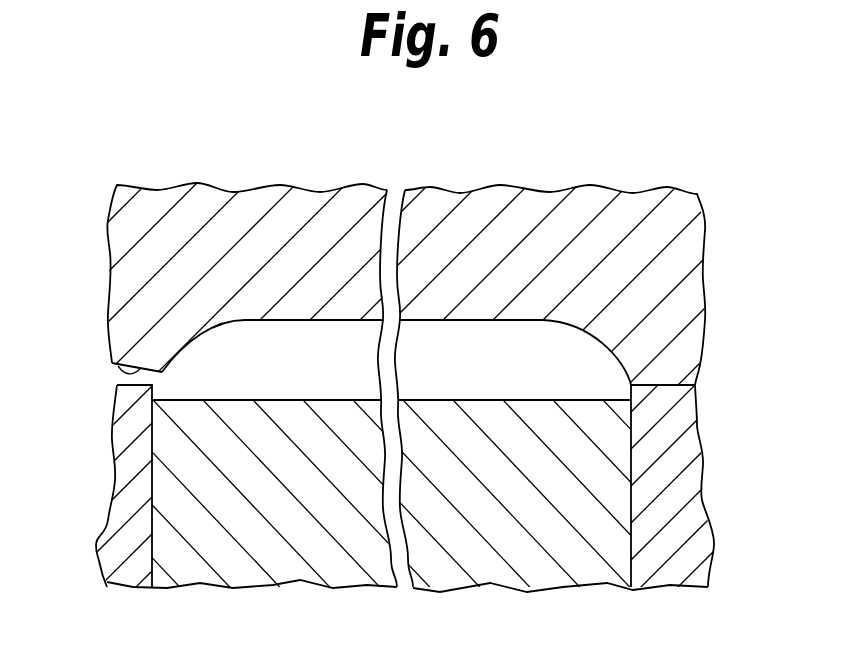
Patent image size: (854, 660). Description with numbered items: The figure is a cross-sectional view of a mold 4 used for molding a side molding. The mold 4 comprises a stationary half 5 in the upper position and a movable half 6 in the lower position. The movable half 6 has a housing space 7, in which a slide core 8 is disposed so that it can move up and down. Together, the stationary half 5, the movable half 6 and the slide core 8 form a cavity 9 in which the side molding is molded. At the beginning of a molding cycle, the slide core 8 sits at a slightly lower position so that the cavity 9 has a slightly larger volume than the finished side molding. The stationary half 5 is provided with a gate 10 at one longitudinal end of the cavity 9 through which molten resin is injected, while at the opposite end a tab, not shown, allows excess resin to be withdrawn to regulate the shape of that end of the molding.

The mold 4 is at (517, 170).
The stationary half 5 is at (688, 290).
The movable half 6 is at (112, 515).
The housing space 7 is at (626, 574).
The slide core 8 is at (297, 578).
The cavity 9 is at (508, 374).
The gate 10 is at (112, 366).